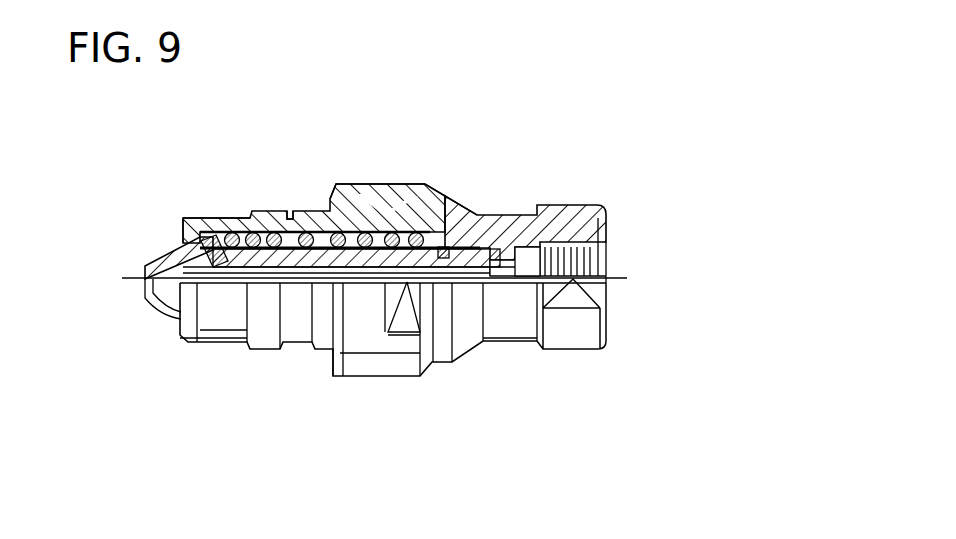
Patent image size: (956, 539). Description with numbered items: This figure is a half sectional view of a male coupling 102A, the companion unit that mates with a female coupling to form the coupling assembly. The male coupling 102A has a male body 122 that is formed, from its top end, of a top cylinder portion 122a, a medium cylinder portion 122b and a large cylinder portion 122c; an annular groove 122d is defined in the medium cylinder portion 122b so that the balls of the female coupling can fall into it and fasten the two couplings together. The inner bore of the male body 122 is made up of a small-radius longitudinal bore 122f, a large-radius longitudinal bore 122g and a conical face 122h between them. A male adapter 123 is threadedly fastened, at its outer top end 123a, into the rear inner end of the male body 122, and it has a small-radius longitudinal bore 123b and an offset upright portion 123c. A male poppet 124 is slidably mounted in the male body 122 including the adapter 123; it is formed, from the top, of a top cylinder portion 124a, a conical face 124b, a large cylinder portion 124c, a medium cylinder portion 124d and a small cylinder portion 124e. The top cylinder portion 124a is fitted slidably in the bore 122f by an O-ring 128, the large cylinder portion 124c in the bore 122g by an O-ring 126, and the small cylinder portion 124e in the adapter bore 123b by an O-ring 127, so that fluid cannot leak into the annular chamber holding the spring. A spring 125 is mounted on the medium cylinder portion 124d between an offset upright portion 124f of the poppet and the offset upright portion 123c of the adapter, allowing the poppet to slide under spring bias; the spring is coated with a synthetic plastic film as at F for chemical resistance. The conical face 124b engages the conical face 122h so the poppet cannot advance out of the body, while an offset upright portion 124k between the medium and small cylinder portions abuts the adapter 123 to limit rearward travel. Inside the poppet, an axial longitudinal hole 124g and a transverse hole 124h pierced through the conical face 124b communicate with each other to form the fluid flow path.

The male coupling 102A is at (692, 290).
The male body 122 is at (387, 186).
The top cylinder portion 122a is at (210, 218).
The medium cylinder portion 122b is at (303, 211).
The large cylinder portion 122c is at (352, 186).
The annular groove 122d is at (322, 200).
The small-radius longitudinal bore 122f is at (200, 236).
The large-radius longitudinal bore 122g is at (291, 212).
The conical face 122h is at (184, 217).
The male adapter 123 is at (470, 200).
The outer top end 123a is at (420, 191).
The small-radius longitudinal bore 123b is at (573, 204).
The offset upright portion 123c is at (508, 212).
The male poppet 124 is at (378, 273).
The top cylinder portion 124a is at (176, 258).
The conical face 124b is at (230, 263).
The large cylinder portion 124c is at (234, 232).
The medium cylinder portion 124d is at (267, 263).
The small cylinder portion 124e is at (477, 263).
The offset upright portion 124f is at (269, 230).
The axial longitudinal hole 124g is at (398, 300).
The transverse hole 124h is at (233, 265).
The offset upright portion 124k is at (385, 290).
The spring 125 is at (353, 273).
The O-ring 126 is at (250, 265).
The O-ring 127 is at (443, 262).
The O-ring 128 is at (188, 263).
The synthetic plastic film F is at (410, 184).